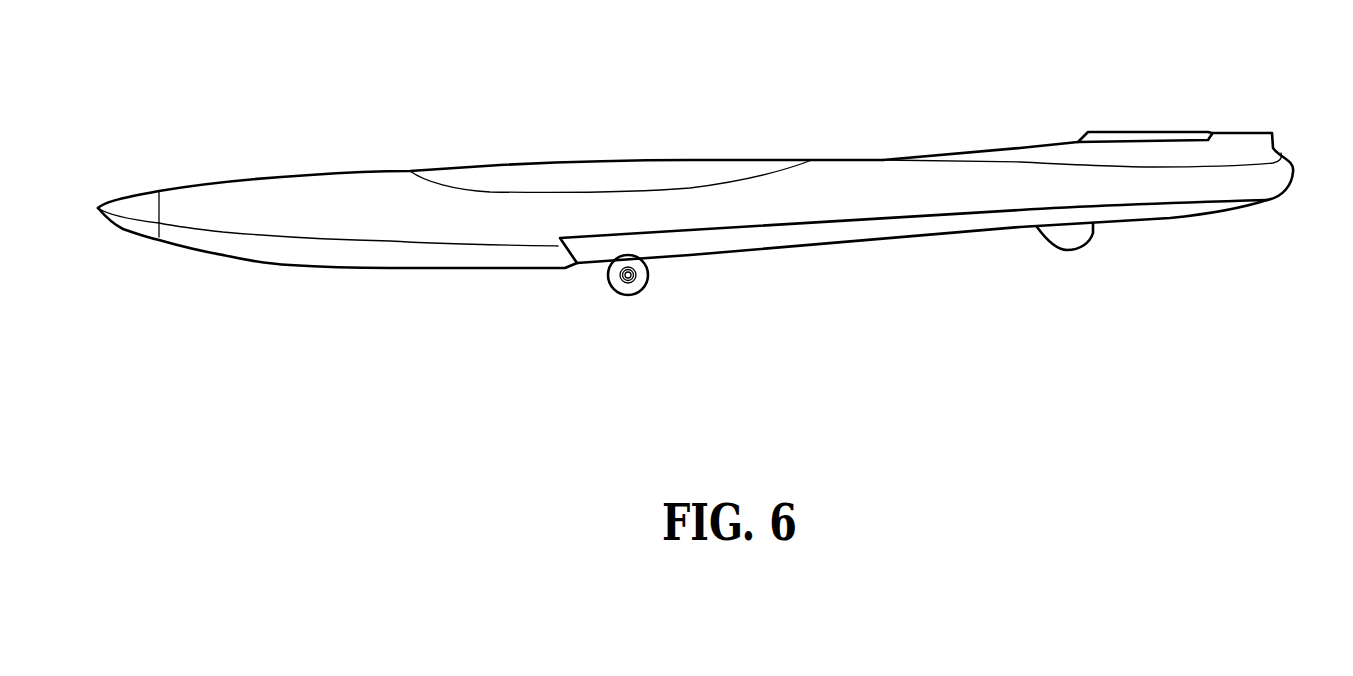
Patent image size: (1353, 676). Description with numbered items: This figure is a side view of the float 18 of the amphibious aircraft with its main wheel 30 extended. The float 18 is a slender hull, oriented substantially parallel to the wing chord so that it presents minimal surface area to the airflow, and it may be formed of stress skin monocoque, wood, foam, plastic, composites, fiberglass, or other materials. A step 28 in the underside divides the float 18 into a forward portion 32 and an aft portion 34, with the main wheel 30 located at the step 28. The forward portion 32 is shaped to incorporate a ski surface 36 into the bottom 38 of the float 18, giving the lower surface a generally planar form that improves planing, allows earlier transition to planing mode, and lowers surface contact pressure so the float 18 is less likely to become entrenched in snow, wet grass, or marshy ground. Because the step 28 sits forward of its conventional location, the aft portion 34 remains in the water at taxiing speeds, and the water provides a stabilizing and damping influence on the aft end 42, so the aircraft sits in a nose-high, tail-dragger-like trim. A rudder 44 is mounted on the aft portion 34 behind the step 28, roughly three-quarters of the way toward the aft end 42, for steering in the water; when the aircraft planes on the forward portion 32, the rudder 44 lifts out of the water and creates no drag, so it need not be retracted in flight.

The float 18 is at (252, 202).
The step 28 is at (577, 268).
The main wheel 30 is at (628, 290).
The forward portion 32 is at (290, 253).
The aft portion 34 is at (988, 225).
The ski surface 36 is at (230, 257).
The bottom 38 is at (363, 270).
The aft end 42 is at (1243, 202).
The rudder 44 is at (1077, 250).